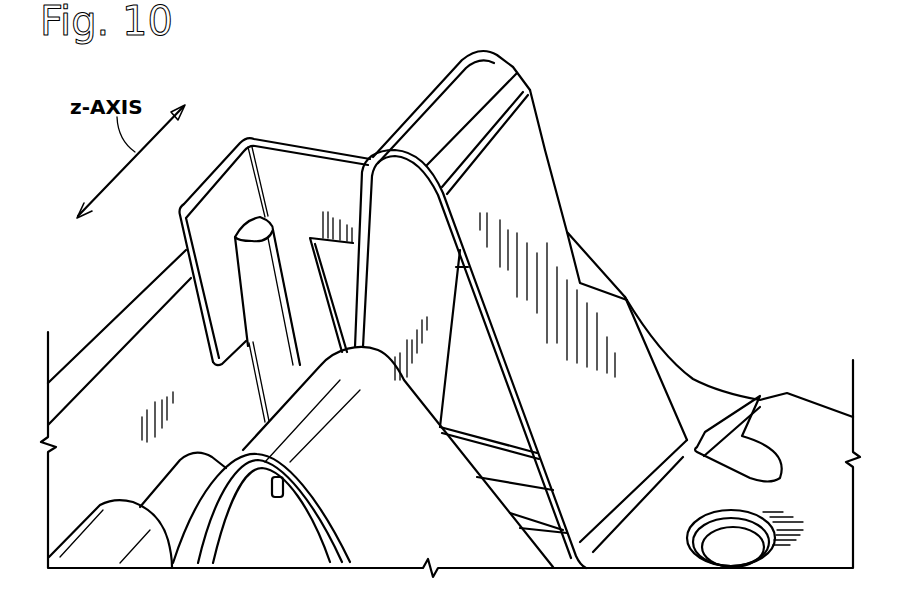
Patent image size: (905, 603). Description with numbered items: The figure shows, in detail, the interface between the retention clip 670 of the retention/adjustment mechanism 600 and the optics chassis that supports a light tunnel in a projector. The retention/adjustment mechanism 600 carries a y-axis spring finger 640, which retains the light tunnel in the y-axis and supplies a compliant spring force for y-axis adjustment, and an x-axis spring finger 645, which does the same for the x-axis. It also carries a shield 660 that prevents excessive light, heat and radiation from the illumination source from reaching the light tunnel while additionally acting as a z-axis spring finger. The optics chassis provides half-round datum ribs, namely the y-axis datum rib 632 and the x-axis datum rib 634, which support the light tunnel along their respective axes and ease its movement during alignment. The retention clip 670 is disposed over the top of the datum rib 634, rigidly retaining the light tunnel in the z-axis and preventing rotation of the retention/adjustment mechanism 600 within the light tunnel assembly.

The retention/adjustment mechanism 600 is at (510, 60).
The y-axis datum rib 632 is at (517, 493).
The x-axis datum rib 634 is at (266, 252).
The y-axis spring finger 640 is at (406, 487).
The x-axis spring finger 645 is at (467, 104).
The shield 660 is at (348, 175).
The retention clip 670 is at (222, 183).